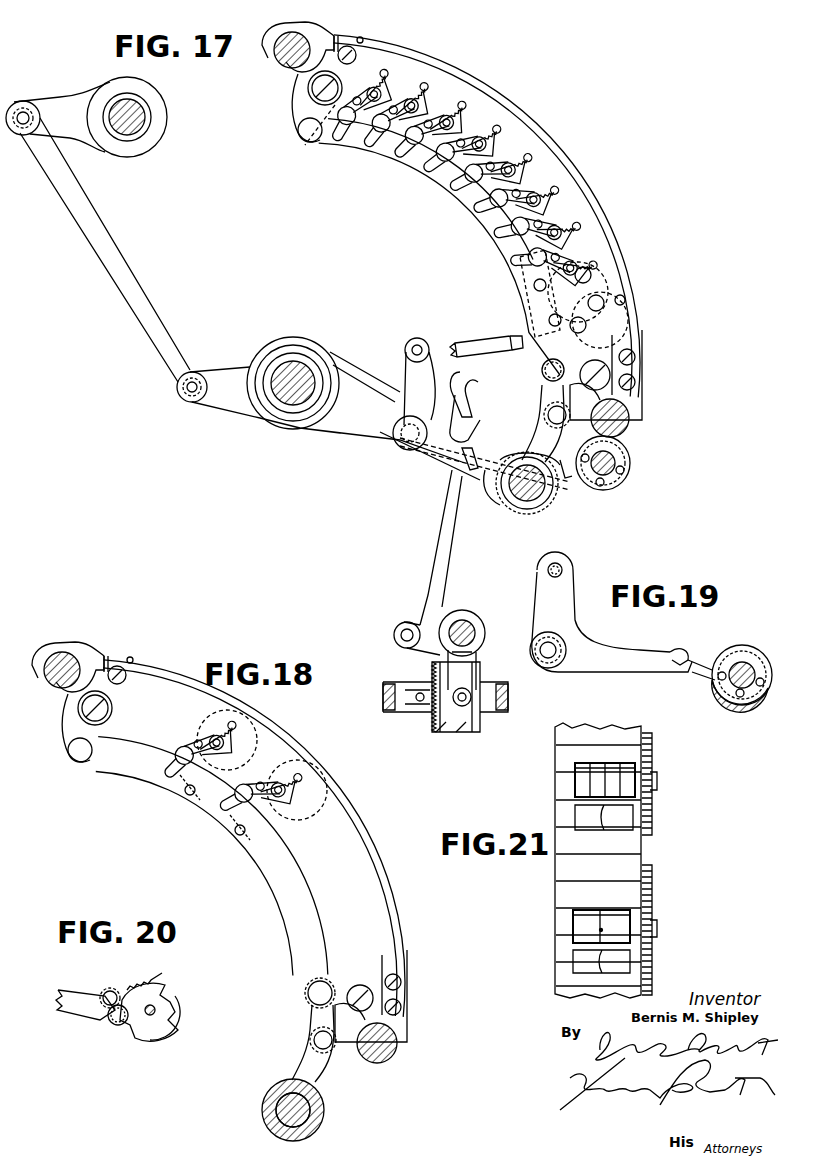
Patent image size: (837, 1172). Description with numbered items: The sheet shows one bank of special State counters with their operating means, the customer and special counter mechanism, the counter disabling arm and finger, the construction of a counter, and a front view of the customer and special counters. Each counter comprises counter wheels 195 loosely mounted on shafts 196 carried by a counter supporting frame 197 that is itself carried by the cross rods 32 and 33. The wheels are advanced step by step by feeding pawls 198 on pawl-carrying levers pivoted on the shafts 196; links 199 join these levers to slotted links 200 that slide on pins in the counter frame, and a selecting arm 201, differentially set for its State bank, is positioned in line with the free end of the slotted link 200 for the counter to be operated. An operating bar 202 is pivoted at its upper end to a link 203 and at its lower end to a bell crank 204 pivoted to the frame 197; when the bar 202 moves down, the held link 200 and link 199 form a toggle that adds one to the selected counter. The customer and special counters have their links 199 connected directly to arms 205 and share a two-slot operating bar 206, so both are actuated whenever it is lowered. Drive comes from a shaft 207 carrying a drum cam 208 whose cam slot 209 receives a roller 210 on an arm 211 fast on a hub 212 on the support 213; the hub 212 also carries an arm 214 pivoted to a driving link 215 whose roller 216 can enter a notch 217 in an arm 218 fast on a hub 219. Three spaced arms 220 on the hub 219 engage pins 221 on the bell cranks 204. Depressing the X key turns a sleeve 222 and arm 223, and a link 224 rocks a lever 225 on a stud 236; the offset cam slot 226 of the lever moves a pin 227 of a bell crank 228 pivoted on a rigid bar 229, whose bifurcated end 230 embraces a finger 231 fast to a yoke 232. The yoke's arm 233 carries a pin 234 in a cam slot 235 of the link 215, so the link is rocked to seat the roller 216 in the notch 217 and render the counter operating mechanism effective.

In FIG. 17, the cross rod 32 is at (283, 62).
In FIG. 18, the cross rod 32 is at (62, 670).
In FIG. 17, the cross rod 33 is at (632, 428).
In FIG. 18, the cross rod 33 is at (389, 1060).
In FIG. 20, the counter wheel 195 is at (163, 986).
In FIG. 21, the counter wheel 195 is at (613, 765).
In FIG. 20, the shaft 196 is at (155, 1016).
In FIG. 17, the counter supporting frame 197 is at (326, 44).
In FIG. 20, the feeding pawl 198 is at (113, 989).
In FIG. 17, the link 199 is at (444, 185).
In FIG. 18, the link 199 is at (263, 820).
In FIG. 20, the link 199 is at (86, 1012).
In FIG. 17, the slotted link 200 is at (522, 290).
In FIG. 17, the selecting arm 201 is at (470, 346).
In FIG. 17, the operating bar 202 is at (495, 234).
In FIG. 17, the link 203 is at (306, 114).
In FIG. 17, the bell crank 204 is at (562, 393).
In FIG. 18, the bell crank 204 is at (313, 1012).
In FIG. 18, the arm 205 is at (236, 828).
In FIG. 18, the operating bar 206 is at (278, 881).
In FIG. 17, the shaft 207 is at (512, 704).
In FIG. 17, the drum cam 208 is at (484, 725).
In FIG. 17, the cam slot 209 is at (447, 734).
In FIG. 17, the roller 210 is at (480, 684).
In FIG. 17, the arm 211 is at (479, 664).
In FIG. 17, the hub 212 is at (486, 630).
In FIG. 17, the support 213 is at (463, 622).
In FIG. 17, the arm 214 is at (428, 658).
In FIG. 17, the driving link 215 is at (450, 537).
In FIG. 17, the roller 216 is at (457, 471).
In FIG. 17, the notch 217 is at (471, 476).
In FIG. 17, the arm 218 is at (487, 498).
In FIG. 17, the hub 219 is at (555, 508).
In FIG. 18, the hub 219 is at (325, 1112).
In FIG. 17, the arm 220 is at (542, 410).
In FIG. 18, the arm 220 is at (301, 1060).
In FIG. 17, the pin 221 is at (566, 418).
In FIG. 18, the pin 221 is at (331, 1050).
In FIG. 17, the sleeve 222 is at (152, 108).
In FIG. 17, the arm 223 is at (52, 104).
In FIG. 17, the link 224 is at (108, 240).
In FIG. 17, the lever 225 is at (220, 376).
In FIG. 17, the cam slot 226 is at (405, 380).
In FIG. 17, the pin 227 is at (423, 349).
In FIG. 19, the pin 227 is at (563, 569).
In FIG. 17, the bell crank 228 is at (417, 340).
In FIG. 19, the bell crank 228 is at (576, 642).
In FIG. 17, the rigid bar 229 is at (359, 445).
In FIG. 19, the bifurcated end 230 is at (677, 650).
In FIG. 19, the finger 231 is at (713, 660).
In FIG. 17, the yoke 232 is at (632, 478).
In FIG. 19, the yoke 232 is at (741, 702).
In FIG. 17, the arm 233 is at (562, 478).
In FIG. 17, the pin 234 is at (474, 414).
In FIG. 17, the cam slot 235 is at (482, 393).
In FIG. 17, the stud 236 is at (302, 362).